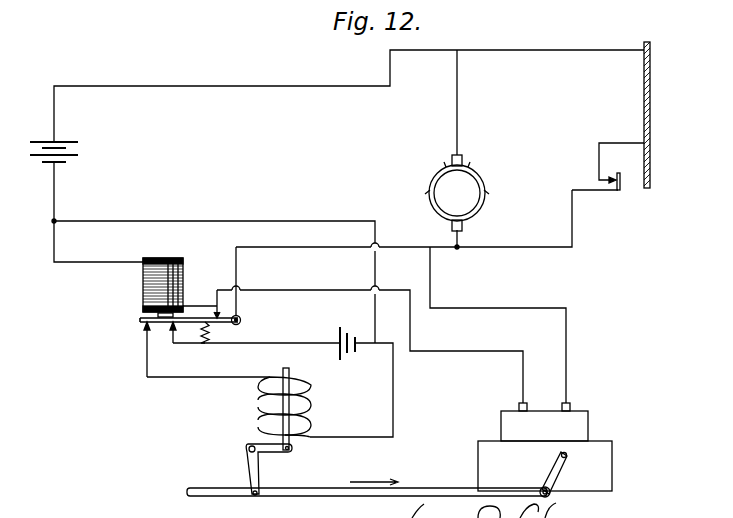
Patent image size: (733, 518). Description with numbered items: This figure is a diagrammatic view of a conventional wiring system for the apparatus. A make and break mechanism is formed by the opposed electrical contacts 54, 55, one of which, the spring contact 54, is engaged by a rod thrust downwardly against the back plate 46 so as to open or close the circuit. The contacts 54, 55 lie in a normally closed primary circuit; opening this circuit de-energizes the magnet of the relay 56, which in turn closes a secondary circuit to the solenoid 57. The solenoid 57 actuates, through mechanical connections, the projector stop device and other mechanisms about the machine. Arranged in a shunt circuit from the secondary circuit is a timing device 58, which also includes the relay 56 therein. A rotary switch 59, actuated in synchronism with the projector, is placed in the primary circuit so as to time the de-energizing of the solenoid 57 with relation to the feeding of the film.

The wall 46 is at (651, 157).
The spring contact 54 is at (621, 188).
The electrical contact 55 is at (612, 178).
The relay 56 is at (142, 287).
The solenoid 57 is at (265, 410).
The timing device 58 is at (492, 457).
The rotary switch 59 is at (434, 184).